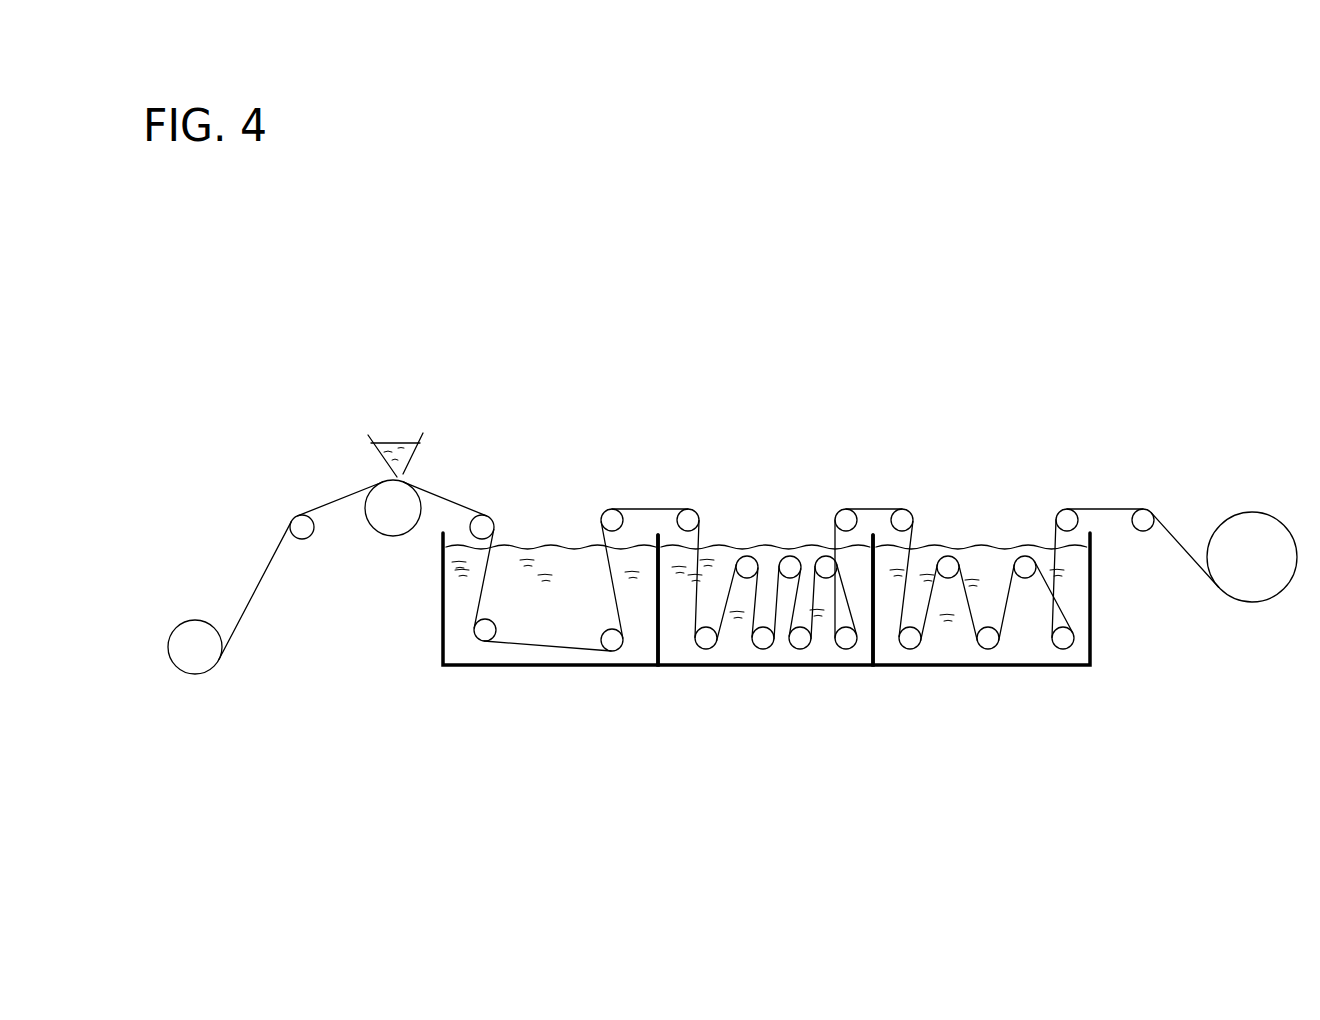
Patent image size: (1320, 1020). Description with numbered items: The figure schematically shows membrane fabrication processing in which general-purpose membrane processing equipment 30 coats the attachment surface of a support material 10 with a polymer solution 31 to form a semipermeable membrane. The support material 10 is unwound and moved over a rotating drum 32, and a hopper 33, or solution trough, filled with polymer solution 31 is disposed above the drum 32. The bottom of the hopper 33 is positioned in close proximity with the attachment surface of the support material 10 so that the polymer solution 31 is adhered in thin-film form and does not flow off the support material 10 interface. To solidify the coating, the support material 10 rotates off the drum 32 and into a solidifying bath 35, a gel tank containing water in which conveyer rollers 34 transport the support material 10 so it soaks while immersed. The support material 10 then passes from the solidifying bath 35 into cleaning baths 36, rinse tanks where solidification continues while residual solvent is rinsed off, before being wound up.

The support material 10 is at (202, 655).
The membrane processing equipment 30 is at (1067, 323).
The polymer solution 31 is at (397, 442).
The rotating drum 32 is at (393, 508).
The hopper 33 is at (417, 453).
The conveyer rollers 34 is at (484, 516).
The solidifying bath 35 is at (545, 490).
The cleaning baths 36 is at (765, 488).